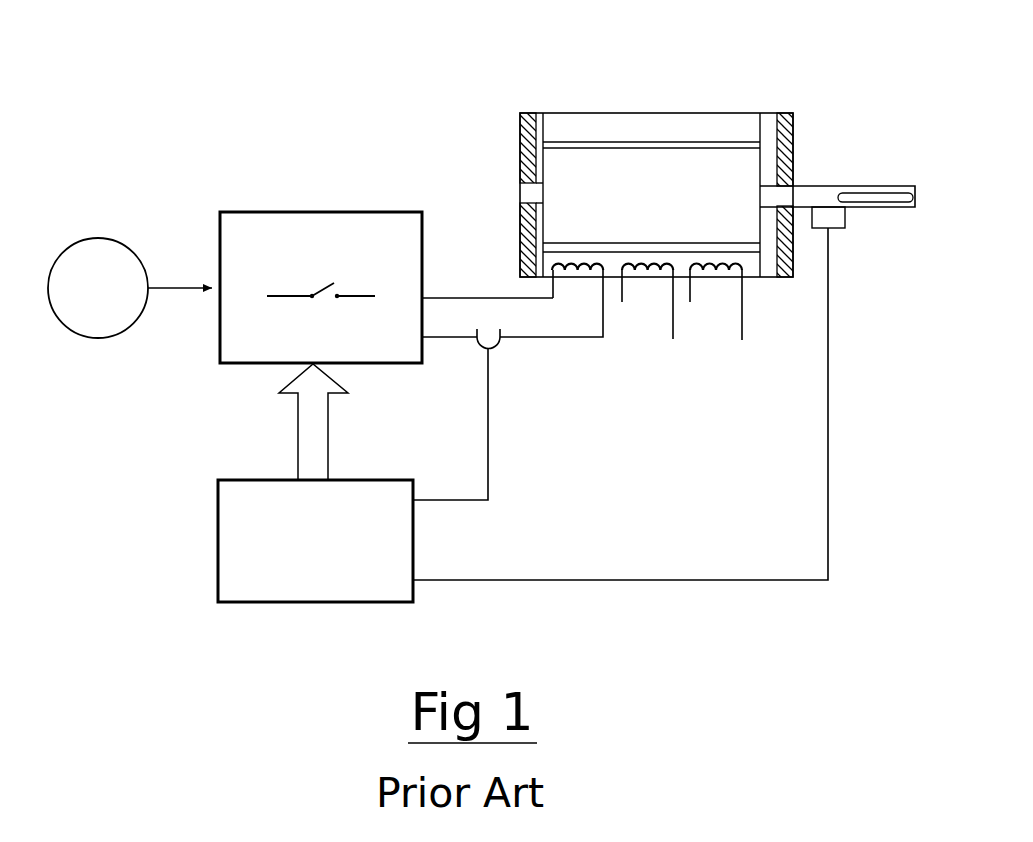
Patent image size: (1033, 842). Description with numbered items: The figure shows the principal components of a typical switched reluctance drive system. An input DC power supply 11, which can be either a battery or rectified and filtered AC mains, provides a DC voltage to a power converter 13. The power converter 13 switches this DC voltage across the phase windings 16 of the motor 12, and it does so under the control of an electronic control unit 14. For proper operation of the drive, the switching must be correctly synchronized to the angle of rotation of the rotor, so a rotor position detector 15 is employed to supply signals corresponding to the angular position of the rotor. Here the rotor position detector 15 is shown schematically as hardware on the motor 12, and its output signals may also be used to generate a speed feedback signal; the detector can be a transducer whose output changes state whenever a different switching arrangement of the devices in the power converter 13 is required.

The input DC power supply 11 is at (98, 235).
The motor 12 is at (617, 112).
The power converter 13 is at (263, 212).
The electronic control unit 14 is at (213, 500).
The rotor position detector 15 is at (849, 220).
The phase windings 16 is at (723, 257).